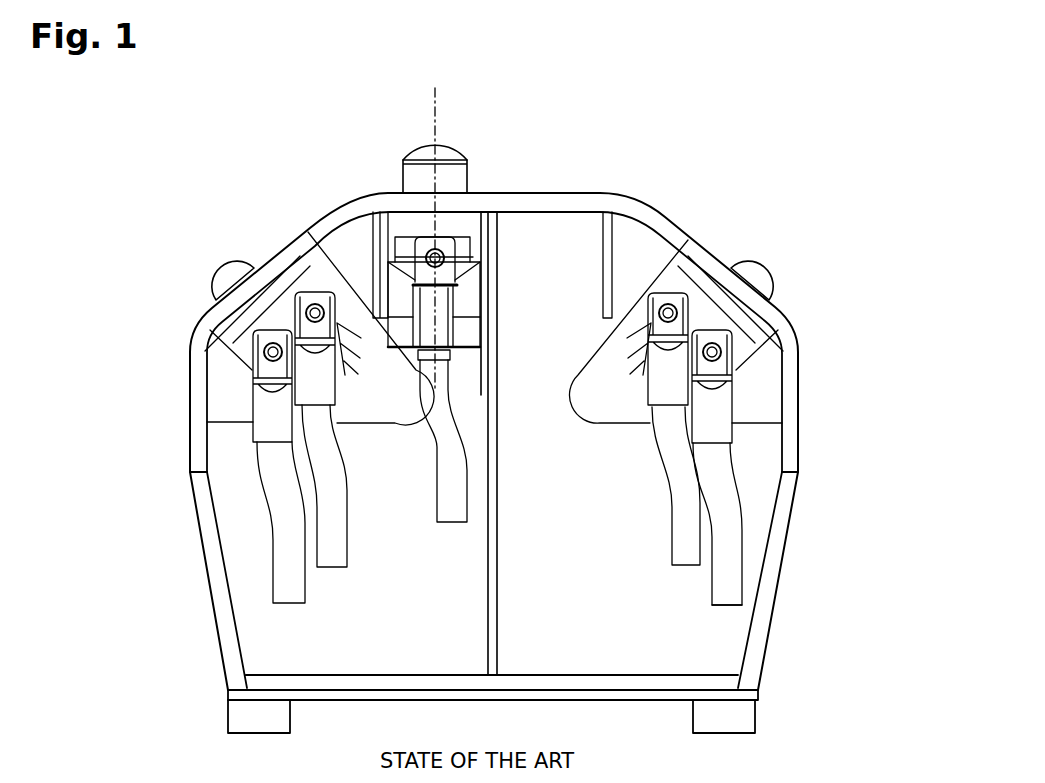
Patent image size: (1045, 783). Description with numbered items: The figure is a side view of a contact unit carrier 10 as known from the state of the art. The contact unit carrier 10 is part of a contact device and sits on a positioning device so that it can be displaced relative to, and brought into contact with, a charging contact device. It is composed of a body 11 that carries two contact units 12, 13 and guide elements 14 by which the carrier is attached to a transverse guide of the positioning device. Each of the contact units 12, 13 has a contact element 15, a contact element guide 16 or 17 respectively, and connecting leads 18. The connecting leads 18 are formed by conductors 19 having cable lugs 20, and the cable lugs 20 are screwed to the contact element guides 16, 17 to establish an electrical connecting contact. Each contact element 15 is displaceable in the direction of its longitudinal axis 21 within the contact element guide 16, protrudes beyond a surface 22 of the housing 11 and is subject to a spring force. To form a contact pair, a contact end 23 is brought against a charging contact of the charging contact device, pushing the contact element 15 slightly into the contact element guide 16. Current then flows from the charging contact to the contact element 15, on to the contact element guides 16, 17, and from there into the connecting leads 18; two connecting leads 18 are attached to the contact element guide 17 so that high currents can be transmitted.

The contact unit carrier 10 is at (797, 156).
The body 11 is at (657, 194).
The contact unit 12 is at (354, 235).
The contact unit 13 is at (216, 360).
The guide element 14 is at (249, 719).
The contact element 15 is at (452, 177).
The contact element guide 16 is at (370, 224).
The contact element guide 17 is at (238, 375).
The connecting lead 18 is at (254, 500).
The conductor 19 is at (733, 591).
The cable lug 20 is at (715, 412).
The longitudinal axis 21 is at (438, 102).
The surface 22 is at (550, 192).
The contact end 23 is at (410, 138).